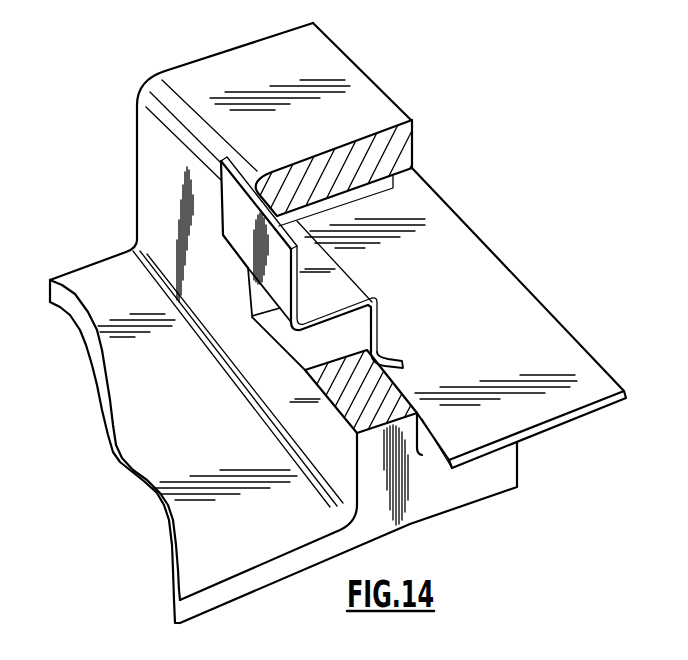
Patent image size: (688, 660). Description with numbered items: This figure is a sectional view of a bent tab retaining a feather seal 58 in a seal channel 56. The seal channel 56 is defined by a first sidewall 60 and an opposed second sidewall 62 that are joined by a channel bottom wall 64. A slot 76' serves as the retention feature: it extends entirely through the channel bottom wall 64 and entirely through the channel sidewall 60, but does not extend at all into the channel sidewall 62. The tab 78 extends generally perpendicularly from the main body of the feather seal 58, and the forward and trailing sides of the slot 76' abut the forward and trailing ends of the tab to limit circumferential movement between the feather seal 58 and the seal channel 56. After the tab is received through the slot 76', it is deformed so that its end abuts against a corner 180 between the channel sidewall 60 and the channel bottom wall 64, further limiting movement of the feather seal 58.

The seal channel 56 is at (428, 446).
The feather seal 58 is at (511, 307).
The first sidewall 60 is at (374, 116).
The second sidewall 62 is at (500, 466).
The channel bottom wall 64 is at (230, 323).
The slot 76' is at (331, 333).
The tab 78 is at (248, 237).
The corner 180 is at (197, 147).